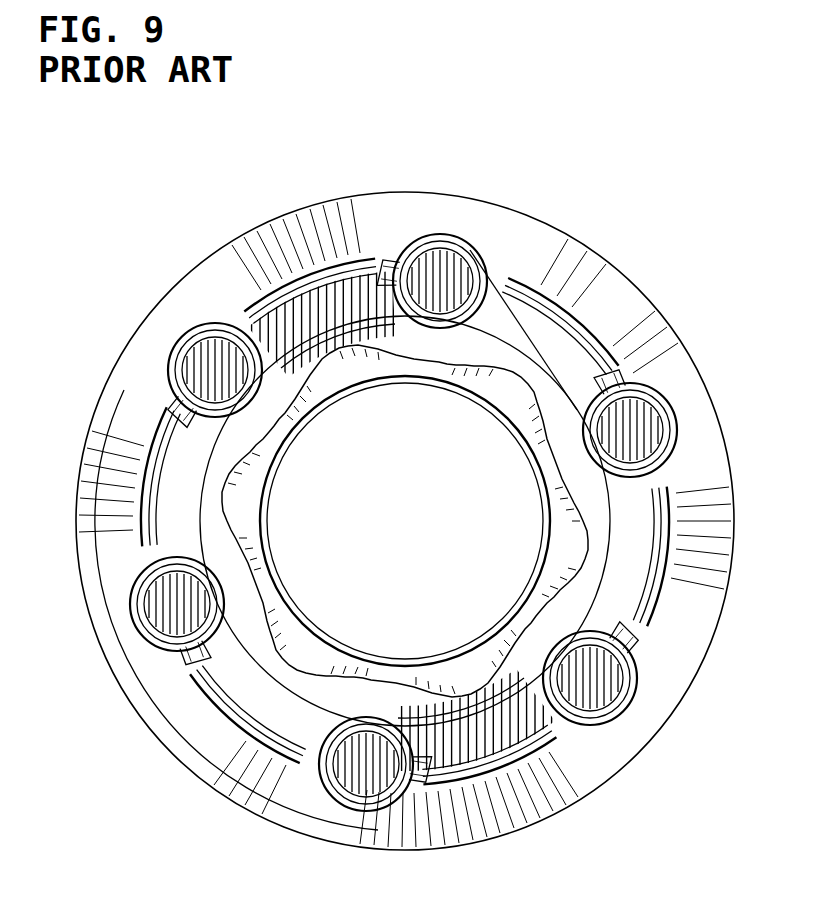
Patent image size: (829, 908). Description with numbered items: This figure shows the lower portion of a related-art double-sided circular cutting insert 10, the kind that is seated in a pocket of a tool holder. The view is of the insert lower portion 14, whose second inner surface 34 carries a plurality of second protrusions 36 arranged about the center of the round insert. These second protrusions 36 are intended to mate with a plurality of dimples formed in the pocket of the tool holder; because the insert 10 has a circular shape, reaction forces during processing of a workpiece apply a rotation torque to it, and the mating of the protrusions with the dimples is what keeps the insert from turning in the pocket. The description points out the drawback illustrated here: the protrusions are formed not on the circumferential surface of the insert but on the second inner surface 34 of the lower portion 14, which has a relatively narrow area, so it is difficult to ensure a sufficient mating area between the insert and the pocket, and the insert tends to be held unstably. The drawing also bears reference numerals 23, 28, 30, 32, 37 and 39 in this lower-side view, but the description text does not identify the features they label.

The double-sided circular insert 10 is at (643, 149).
The insert lower portion 14 is at (252, 222).
The inner edge of outer ring 23 is at (172, 748).
The outer race 28 is at (618, 290).
The outer ring body 30 is at (543, 222).
The cage 32 is at (352, 262).
The second inner surface 34 is at (173, 460).
The second protrusions 36 is at (468, 250).
The roller pocket 37 is at (443, 245).
The cage band 39 is at (383, 268).